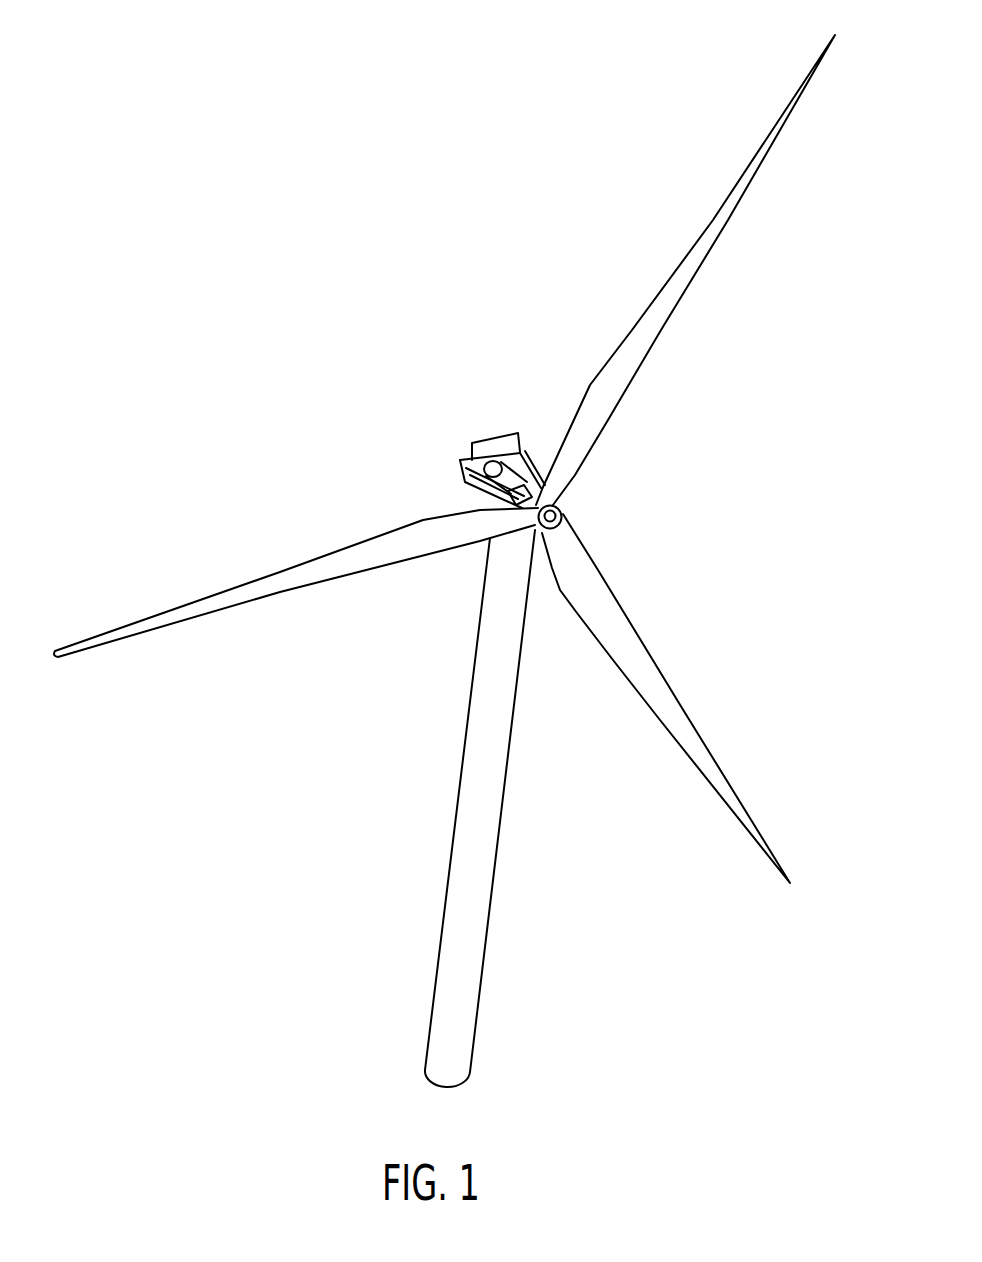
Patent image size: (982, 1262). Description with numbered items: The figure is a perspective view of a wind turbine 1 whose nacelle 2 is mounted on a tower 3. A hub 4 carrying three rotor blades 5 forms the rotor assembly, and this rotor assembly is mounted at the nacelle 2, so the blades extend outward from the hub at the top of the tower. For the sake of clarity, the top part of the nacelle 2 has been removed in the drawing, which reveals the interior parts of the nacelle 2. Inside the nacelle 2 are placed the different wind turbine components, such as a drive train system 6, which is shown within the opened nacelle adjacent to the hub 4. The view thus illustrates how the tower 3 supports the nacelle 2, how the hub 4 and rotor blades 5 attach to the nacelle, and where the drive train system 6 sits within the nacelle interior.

The wind turbine 1 is at (222, 892).
The nacelle 2 is at (460, 466).
The tower 3 is at (472, 782).
The hub 4 is at (563, 507).
The rotor blades 5 is at (615, 383).
The drive train system 6 is at (518, 437).